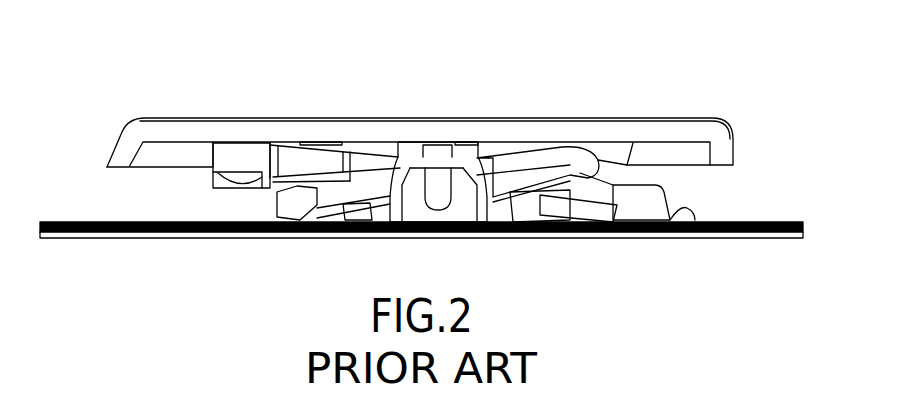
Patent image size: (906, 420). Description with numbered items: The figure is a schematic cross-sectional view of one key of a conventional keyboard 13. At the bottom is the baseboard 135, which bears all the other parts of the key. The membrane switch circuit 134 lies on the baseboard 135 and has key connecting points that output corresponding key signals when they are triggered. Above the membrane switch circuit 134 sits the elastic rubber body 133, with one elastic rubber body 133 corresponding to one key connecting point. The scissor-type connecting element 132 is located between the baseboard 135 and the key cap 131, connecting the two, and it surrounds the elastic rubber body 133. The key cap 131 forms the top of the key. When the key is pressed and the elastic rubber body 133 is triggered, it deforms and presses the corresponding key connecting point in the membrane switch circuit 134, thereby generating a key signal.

The keyboard 13 is at (660, 58).
The key cap 131 is at (377, 128).
The scissor-type connecting element 132 is at (240, 158).
The elastic rubber body 133 is at (463, 150).
The membrane switch circuit 134 is at (713, 231).
The baseboard 135 is at (607, 237).